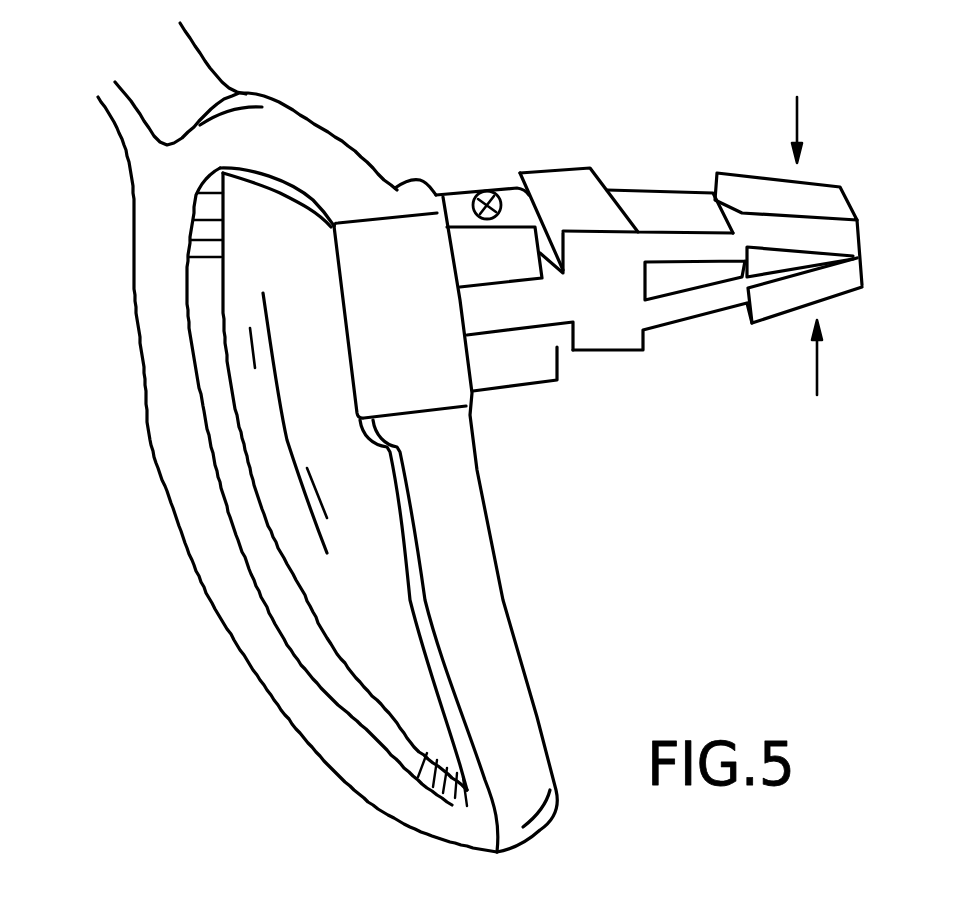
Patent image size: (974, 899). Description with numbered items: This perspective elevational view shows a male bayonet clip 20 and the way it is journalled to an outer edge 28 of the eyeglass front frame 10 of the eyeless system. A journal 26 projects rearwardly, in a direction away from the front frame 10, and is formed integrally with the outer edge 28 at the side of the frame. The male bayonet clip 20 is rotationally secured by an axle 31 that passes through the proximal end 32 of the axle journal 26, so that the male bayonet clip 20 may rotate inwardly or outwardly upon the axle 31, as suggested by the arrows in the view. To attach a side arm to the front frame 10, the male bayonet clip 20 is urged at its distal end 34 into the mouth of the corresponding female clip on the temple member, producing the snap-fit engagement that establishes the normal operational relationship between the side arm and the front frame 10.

The front frame 10 is at (183, 486).
The male bayonet clip 20 is at (650, 190).
The journal 26 is at (538, 348).
The outer edge 28 is at (397, 270).
The axle 31 is at (491, 190).
The proximal end 32 is at (507, 307).
The distal end 34 is at (863, 278).